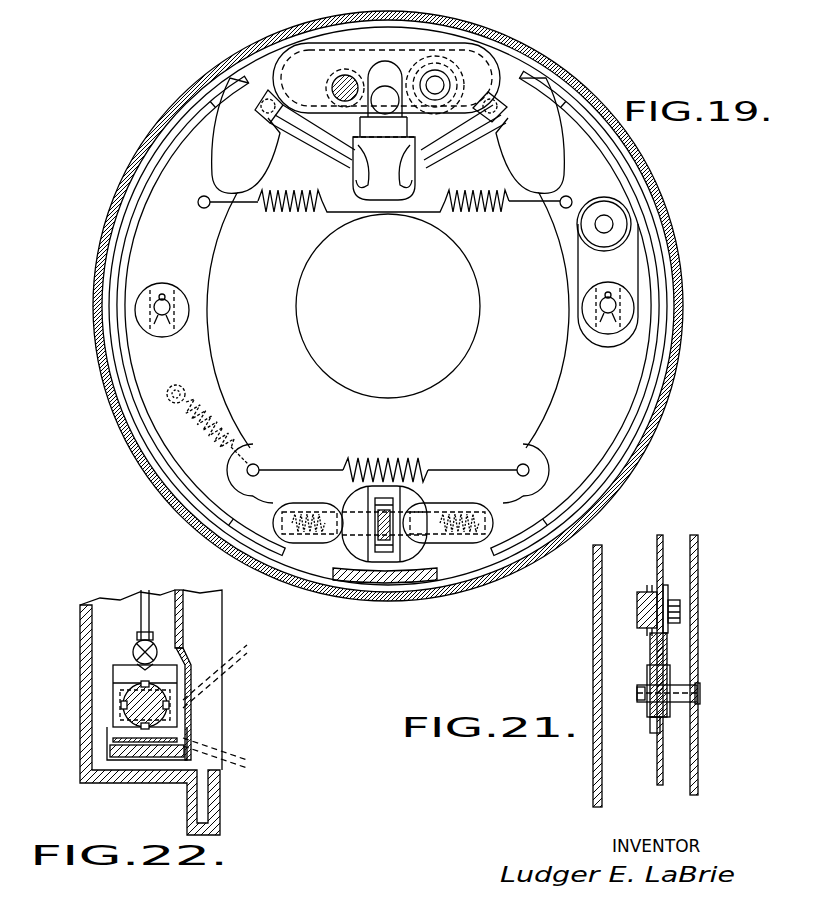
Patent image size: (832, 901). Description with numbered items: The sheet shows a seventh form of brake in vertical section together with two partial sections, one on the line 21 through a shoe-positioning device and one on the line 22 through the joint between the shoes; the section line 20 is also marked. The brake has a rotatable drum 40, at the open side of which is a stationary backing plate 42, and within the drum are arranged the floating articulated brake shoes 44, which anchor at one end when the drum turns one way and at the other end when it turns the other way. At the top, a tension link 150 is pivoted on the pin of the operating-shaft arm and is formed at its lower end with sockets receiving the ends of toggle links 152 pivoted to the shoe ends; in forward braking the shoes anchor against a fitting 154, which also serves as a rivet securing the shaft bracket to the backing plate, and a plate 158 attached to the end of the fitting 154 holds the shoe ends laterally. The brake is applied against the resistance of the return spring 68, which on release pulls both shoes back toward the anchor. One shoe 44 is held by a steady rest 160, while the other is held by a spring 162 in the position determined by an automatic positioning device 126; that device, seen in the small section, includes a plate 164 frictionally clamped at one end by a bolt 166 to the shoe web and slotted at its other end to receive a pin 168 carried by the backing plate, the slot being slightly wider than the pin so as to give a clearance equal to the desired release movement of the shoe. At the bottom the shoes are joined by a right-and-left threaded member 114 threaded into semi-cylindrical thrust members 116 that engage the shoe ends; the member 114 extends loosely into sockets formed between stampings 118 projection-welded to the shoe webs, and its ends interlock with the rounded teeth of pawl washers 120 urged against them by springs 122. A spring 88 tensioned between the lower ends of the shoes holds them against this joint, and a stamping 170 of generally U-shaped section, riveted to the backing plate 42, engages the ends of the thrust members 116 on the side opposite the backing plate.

In FIG. 19, the section line 20- 20 is at (133, 95).
In FIG. 19, the section line 21— 21 is at (600, 198).
In FIG. 19, the section line 22— 22 is at (388, 441).
In FIG. 19, the rotatable drum 40 is at (684, 292).
In FIG. 22, the rotatable drum 40 is at (129, 712).
In FIG. 21, the rotatable drum 40 is at (600, 642).
In FIG. 19, the backing plate 42 is at (361, 306).
In FIG. 22, the backing plate 42 is at (205, 700).
In FIG. 21, the backing plate 42 is at (700, 652).
In FIG. 19, the floating articulated brake shoes 44 is at (207, 380).
In FIG. 22, the floating articulated brake shoes 44 is at (145, 590).
In FIG. 21, the floating articulated brake shoes 44 is at (658, 762).
In FIG. 19, the return spring 68 is at (470, 212).
In FIG. 19, the spring 88 is at (410, 457).
In FIG. 22, the spring 88 is at (139, 643).
In FIG. 19, the right-and-left threaded member 114 is at (386, 548).
In FIG. 22, the right-and-left threaded member 114 is at (125, 707).
In FIG. 19, the semi-cylindrical thrust members 116 is at (360, 545).
In FIG. 19, the stampings 118 is at (240, 470).
In FIG. 22, the stampings 118 is at (158, 650).
In FIG. 19, the pawl washers 120 is at (312, 502).
In FIG. 19, the springs 122 is at (306, 506).
In FIG. 19, the automatic positioning devices 126 is at (608, 285).
In FIG. 19, the tension link 150 is at (388, 292).
In FIG. 19, the toggle links 152 is at (325, 155).
In FIG. 19, the fitting 154 is at (445, 72).
In FIG. 19, the plate 158 is at (383, 89).
In FIG. 19, the steady rest 160 is at (183, 306).
In FIG. 19, the spring 162 is at (230, 418).
In FIG. 21, the plate 164 is at (664, 652).
In FIG. 21, the bolt 166 is at (672, 608).
In FIG. 21, the pin 168 is at (680, 697).
In FIG. 19, the stamping 170 is at (398, 572).
In FIG. 22, the stamping 170 is at (190, 752).